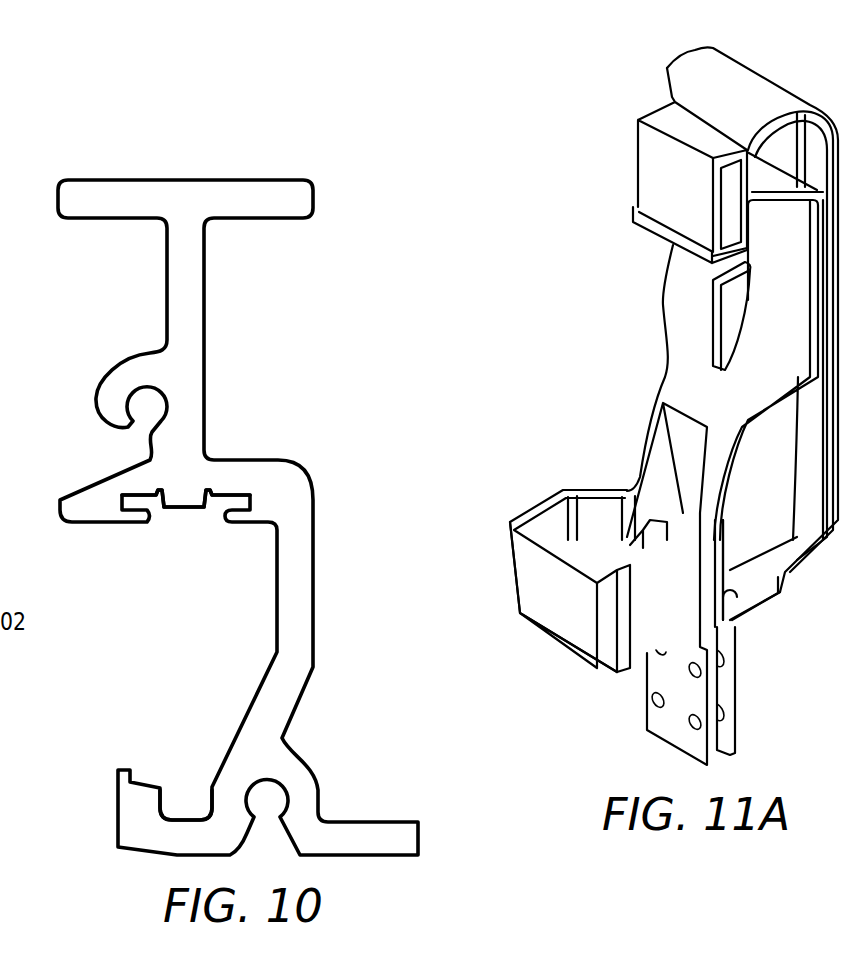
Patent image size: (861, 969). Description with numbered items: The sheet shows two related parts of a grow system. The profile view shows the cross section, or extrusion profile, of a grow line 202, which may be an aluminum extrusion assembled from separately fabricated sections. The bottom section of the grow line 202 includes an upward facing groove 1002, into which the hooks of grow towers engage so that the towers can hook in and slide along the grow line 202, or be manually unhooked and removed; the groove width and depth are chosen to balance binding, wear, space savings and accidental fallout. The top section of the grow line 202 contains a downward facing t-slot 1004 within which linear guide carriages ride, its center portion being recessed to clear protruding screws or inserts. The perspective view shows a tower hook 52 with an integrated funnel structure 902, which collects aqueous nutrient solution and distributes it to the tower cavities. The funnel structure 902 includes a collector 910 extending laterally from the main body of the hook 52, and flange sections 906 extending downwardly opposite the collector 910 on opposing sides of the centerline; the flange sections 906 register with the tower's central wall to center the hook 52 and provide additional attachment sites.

In FIG. 10, the grow line 202 is at (115, 163).
In FIG. 10, the t-slot 1004 is at (155, 513).
In FIG. 10, the groove 1002 is at (188, 815).
In FIG. 11A, the hook 52 is at (595, 127).
In FIG. 11A, the funnel structure 902 is at (548, 493).
In FIG. 11A, the collector 910 is at (522, 570).
In FIG. 11A, the flange sections 906 is at (647, 700).